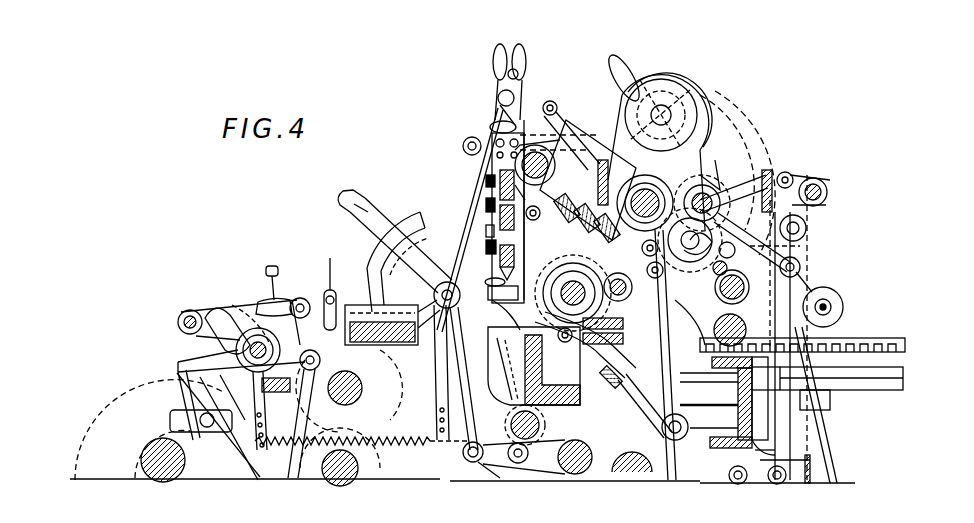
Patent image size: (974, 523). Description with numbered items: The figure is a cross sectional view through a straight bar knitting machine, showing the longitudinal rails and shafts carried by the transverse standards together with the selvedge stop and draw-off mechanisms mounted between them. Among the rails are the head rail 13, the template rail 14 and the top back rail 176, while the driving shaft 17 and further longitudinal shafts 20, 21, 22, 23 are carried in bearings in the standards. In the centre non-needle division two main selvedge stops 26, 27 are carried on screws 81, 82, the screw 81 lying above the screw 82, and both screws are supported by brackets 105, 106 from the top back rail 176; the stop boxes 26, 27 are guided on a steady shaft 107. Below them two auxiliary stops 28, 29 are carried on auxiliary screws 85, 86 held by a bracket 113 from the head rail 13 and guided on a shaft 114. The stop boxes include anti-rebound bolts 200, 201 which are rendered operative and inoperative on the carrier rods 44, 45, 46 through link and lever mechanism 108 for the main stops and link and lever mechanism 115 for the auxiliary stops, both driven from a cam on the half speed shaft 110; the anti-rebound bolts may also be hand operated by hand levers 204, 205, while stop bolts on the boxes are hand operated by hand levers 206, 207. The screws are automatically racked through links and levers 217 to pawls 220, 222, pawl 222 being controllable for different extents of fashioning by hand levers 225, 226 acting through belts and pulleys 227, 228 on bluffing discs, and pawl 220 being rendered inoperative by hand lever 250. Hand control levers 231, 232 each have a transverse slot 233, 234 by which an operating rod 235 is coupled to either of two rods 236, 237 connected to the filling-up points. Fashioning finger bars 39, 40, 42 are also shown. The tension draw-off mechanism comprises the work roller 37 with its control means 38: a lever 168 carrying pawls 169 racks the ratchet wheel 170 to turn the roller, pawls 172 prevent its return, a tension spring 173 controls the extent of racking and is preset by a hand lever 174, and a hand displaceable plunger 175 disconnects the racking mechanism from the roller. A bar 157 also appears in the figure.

The head rail 13 is at (530, 378).
The template rail 14 is at (362, 305).
The driving shaft 17 is at (150, 461).
The shaft 20 is at (362, 392).
The shaft 21 is at (512, 430).
The shaft 22 is at (640, 232).
The shaft 23 is at (628, 468).
The main selvedge stop 26 is at (564, 112).
The main selvedge stop 27 is at (556, 100).
The auxiliary stop 28 is at (536, 293).
The auxiliary stop 29 is at (540, 283).
The work roller 37 is at (262, 277).
The control means 38 is at (184, 304).
The fashioning finger bar 39 is at (495, 216).
The fashioning finger bar 40 is at (505, 244).
The fashioning finger bar 42 is at (518, 264).
The carrier rod 44 is at (500, 230).
The carrier rod 45 is at (495, 262).
The carrier rod 46 is at (552, 180).
The screw 81 is at (752, 190).
The screw 82 is at (703, 224).
The auxiliary screw 85 is at (802, 348).
The auxiliary screw 86 is at (800, 268).
The bracket 105 is at (839, 346).
The bracket 106 is at (806, 228).
The steady shaft 107 is at (728, 159).
The link and lever mechanism 108 is at (772, 184).
The half speed shaft 110 is at (805, 478).
The bracket 113 is at (525, 322).
The shaft 114 is at (634, 288).
The link and lever mechanism 115 is at (598, 364).
The bar 157 is at (302, 465).
The lever 168 is at (292, 354).
The pawl 169 is at (215, 320).
The ratchet wheel 170 is at (244, 310).
The pawl 172 is at (326, 300).
The tension spring 173 is at (383, 440).
The hand lever 174 is at (343, 200).
The hand displaceable plunger 175 is at (300, 297).
The back rail 176 is at (805, 376).
The anti-rebound bolt 200 is at (588, 181).
The anti-rebound bolt 201 is at (437, 283).
The hand lever 204 is at (671, 95).
The hand lever 205 is at (671, 95).
The hand lever 206 is at (608, 67).
The hand lever 207 is at (613, 95).
The links and levers 217 is at (510, 466).
The pawl 220 is at (515, 300).
The pawl 222 is at (808, 247).
The hand lever 225 is at (663, 146).
The hand lever 226 is at (663, 146).
The belt and pulley 227 is at (719, 155).
The belt and pulley 228 is at (680, 130).
The hand control lever 231 is at (494, 52).
The hand control lever 232 is at (510, 64).
The transverse slot 233 is at (499, 92).
The transverse slot 234 is at (500, 105).
The operating rod 235 is at (488, 202).
The rod 236 is at (492, 141).
The rod 237 is at (494, 153).
The hand lever 250 is at (335, 264).